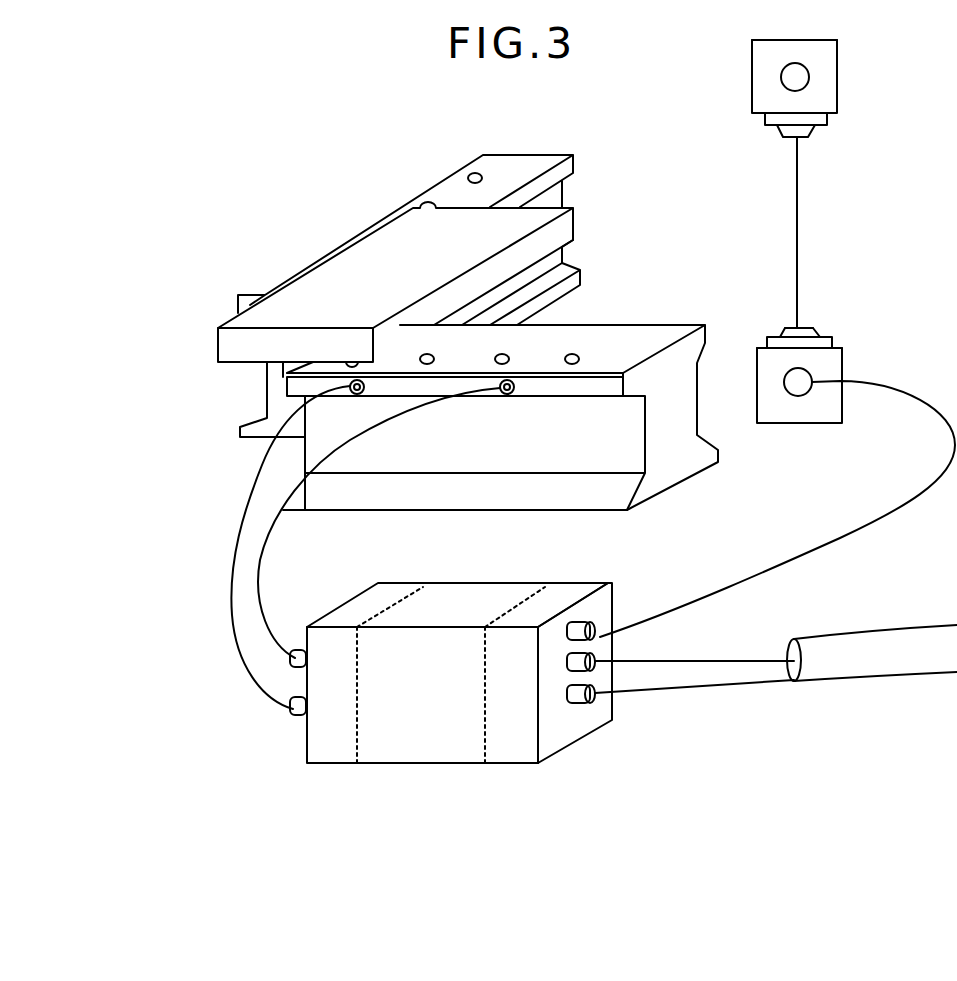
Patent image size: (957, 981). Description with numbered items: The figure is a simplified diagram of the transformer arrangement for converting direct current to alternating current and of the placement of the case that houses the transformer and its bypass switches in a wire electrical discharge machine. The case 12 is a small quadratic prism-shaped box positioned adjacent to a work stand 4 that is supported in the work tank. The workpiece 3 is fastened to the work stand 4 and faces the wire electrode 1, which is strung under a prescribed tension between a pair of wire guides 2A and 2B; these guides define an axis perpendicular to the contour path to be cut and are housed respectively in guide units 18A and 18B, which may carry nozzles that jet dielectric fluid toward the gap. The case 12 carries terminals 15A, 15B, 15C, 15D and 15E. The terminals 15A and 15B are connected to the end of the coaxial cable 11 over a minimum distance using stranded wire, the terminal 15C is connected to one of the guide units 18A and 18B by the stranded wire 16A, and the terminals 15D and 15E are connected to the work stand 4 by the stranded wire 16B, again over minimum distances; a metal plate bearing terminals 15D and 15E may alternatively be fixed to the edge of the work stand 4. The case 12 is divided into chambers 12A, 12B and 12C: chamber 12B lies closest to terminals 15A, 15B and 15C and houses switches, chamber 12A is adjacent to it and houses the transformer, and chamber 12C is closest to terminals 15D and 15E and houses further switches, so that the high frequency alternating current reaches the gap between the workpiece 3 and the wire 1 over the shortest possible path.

The wire electrode 1 is at (798, 248).
The wire guide 2A is at (880, 63).
The wire guide 2B is at (883, 325).
The workpiece 3 is at (235, 348).
The work stand 4 is at (500, 167).
The coaxial cable 11 is at (887, 667).
The case 12 is at (461, 684).
The chamber 12A is at (466, 603).
The chamber 12B is at (567, 598).
The chamber 12C is at (380, 600).
The terminal 15A is at (577, 699).
The terminal 15B is at (562, 673).
The terminal 15C is at (607, 603).
The terminal 15D is at (287, 715).
The terminal 15E is at (293, 650).
The stranded wire 16A is at (840, 533).
The stranded wire 16B is at (253, 577).
The guide unit 18A is at (762, 88).
The guide unit 18B is at (779, 400).